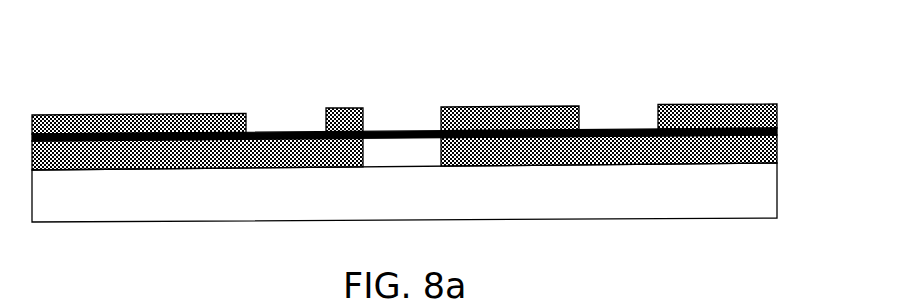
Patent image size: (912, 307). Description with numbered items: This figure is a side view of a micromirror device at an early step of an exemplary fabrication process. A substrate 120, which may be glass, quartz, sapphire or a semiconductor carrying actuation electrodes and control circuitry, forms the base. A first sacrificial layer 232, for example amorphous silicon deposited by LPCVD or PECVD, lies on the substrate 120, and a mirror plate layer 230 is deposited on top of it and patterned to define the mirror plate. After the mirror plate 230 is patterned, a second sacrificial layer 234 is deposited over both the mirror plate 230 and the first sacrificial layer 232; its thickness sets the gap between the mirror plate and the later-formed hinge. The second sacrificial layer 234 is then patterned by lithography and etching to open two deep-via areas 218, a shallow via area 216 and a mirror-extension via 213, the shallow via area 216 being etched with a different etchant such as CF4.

The substrate 120 is at (580, 220).
The first sacrificial layer 232 is at (777, 143).
The mirror plate layer 230 is at (605, 128).
The shallow via area 216 is at (282, 117).
The deep-via area 218 is at (396, 117).
The mirror-extension via 213 is at (633, 85).
The second sacrificial layer 234 is at (728, 105).